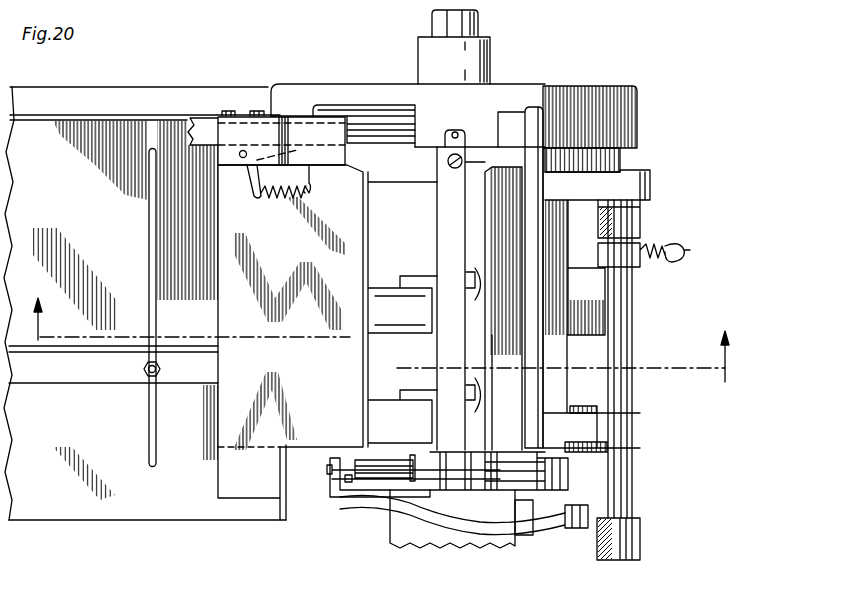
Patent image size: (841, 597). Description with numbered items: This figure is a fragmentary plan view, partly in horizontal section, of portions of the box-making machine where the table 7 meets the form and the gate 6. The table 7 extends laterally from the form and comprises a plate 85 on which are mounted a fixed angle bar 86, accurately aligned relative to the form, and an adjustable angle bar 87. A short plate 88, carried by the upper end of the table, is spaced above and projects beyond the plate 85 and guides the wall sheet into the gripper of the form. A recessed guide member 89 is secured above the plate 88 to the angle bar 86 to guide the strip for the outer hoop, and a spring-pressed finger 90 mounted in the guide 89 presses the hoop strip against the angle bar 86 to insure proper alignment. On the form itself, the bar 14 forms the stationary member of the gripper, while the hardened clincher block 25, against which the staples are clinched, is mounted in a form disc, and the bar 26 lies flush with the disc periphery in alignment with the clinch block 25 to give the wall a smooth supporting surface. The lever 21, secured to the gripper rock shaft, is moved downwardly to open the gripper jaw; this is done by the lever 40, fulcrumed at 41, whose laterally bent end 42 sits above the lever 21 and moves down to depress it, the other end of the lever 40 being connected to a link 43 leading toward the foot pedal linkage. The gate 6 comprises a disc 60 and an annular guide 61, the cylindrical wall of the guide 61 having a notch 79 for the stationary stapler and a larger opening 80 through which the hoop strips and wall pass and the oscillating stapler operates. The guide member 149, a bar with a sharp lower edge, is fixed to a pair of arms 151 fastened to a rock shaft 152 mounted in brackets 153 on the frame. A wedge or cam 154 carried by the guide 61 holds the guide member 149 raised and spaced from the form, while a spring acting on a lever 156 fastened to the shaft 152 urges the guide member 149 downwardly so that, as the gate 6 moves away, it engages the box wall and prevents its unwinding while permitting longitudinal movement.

The movable gate 6 is at (640, 88).
The table 7 is at (30, 146).
The bar 14 is at (570, 353).
The lever 21 is at (368, 480).
The clincher block 25 is at (448, 166).
The bar 26 is at (440, 250).
The lever 40 is at (427, 508).
The fulcrum 41 is at (528, 535).
The laterally bent end 42 is at (332, 485).
The link 43 is at (578, 528).
The disc 60 is at (390, 117).
The annular guide 61 is at (570, 105).
The notch 79 is at (453, 131).
The opening 80 is at (372, 108).
The plate 85 is at (62, 497).
The fixed angle bar 86 is at (87, 115).
The adjustable angle bar 87 is at (53, 373).
The short plate 88 is at (348, 222).
The recessed guide member 89 is at (222, 152).
The spring-pressed finger 90 is at (242, 178).
The guide member 149 is at (530, 254).
The arms 151 is at (577, 188).
The rock shaft 152 is at (627, 488).
The brackets 153 is at (612, 227).
The wedge or cam 154 is at (522, 115).
The lever 156 is at (687, 255).